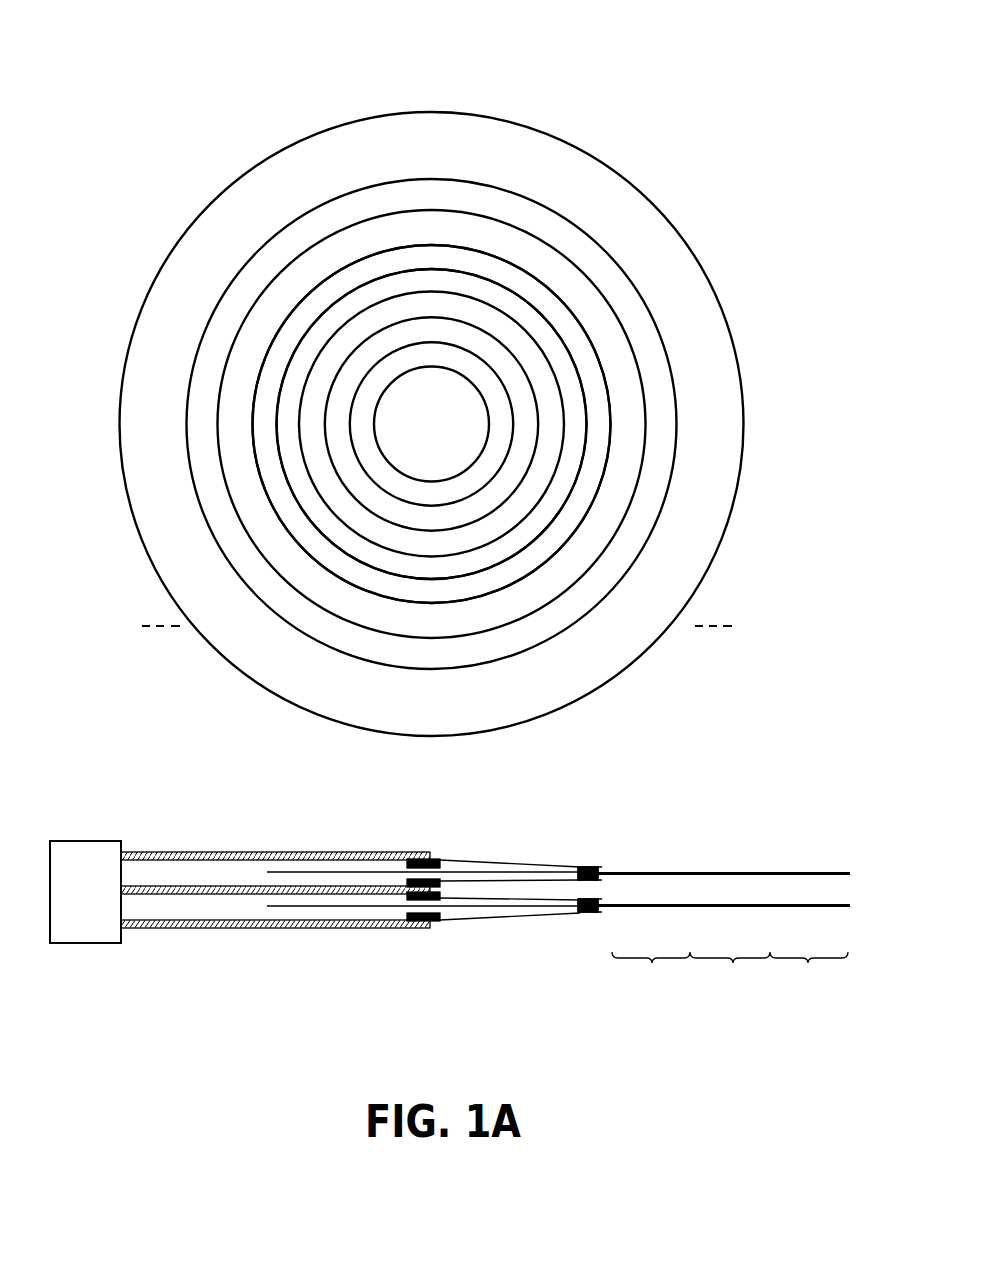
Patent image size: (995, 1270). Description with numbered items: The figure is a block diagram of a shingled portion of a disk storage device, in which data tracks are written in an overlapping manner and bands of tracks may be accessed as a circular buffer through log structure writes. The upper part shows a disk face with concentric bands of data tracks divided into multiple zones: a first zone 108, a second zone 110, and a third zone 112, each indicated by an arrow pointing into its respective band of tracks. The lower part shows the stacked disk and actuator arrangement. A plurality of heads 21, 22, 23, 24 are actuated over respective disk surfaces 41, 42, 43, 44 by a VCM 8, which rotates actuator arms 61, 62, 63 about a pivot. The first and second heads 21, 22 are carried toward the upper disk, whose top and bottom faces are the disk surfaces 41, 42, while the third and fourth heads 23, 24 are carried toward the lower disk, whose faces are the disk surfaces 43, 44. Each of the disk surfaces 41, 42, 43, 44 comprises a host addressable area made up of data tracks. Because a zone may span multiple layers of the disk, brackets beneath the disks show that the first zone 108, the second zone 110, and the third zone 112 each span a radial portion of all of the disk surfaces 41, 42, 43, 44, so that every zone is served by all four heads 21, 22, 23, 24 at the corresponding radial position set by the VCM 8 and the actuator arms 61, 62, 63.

The VCM 8 is at (78, 841).
The actuator arm 61 is at (148, 851).
The actuator arm 62 is at (210, 886).
The actuator arm 63 is at (250, 920).
The head 21 is at (588, 866).
The head 22 is at (577, 868).
The head 23 is at (573, 907).
The head 24 is at (588, 914).
The disk surface 41 is at (742, 873).
The disk surface 42 is at (788, 875).
The disk surface 43 is at (763, 904).
The disk surface 44 is at (788, 907).
The zone 1 108 is at (503, 207).
The zone 2 110 is at (410, 227).
The zone 3 112 is at (514, 273).